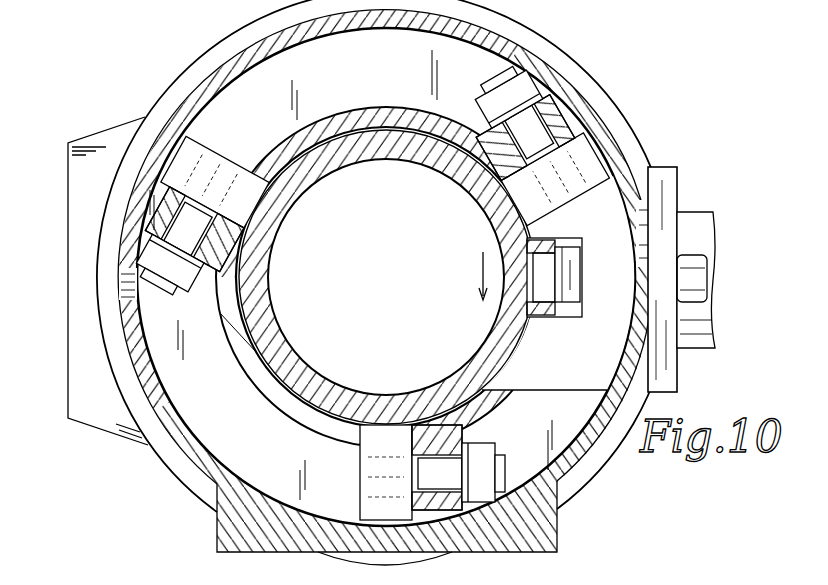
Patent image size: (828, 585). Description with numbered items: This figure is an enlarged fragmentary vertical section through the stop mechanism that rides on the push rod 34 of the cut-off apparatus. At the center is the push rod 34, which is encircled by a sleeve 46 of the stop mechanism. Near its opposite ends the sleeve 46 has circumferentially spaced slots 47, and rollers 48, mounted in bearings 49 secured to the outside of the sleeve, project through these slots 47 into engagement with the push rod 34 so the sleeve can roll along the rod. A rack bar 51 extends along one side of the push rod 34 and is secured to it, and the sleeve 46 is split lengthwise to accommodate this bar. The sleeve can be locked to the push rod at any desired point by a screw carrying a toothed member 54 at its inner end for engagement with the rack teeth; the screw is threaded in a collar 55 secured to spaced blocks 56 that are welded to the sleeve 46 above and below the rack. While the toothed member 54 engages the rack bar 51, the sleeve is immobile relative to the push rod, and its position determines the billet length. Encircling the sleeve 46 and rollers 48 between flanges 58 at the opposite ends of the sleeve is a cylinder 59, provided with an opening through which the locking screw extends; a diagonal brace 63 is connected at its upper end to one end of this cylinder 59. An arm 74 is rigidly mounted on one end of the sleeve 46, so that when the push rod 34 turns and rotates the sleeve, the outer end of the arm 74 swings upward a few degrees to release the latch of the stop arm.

The push rod 34 is at (380, 155).
The sleeve 46 is at (291, 415).
The slots 47 is at (268, 160).
The rollers 48 is at (364, 472).
The bearings 49 is at (467, 464).
The rack bar 51 is at (565, 268).
The toothed member 54 is at (574, 314).
The collar 55 is at (690, 220).
The blocks 56 is at (586, 380).
The flanges 58 is at (616, 125).
The cylinder 59 is at (163, 459).
The diagonal brace 63 is at (381, 558).
The arm 74 is at (78, 403).